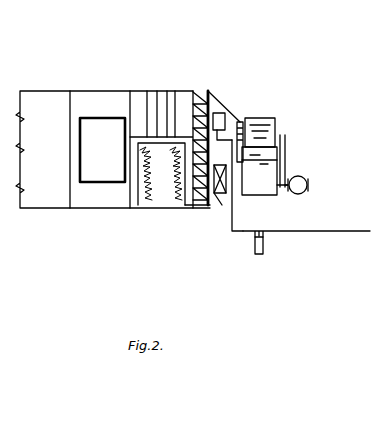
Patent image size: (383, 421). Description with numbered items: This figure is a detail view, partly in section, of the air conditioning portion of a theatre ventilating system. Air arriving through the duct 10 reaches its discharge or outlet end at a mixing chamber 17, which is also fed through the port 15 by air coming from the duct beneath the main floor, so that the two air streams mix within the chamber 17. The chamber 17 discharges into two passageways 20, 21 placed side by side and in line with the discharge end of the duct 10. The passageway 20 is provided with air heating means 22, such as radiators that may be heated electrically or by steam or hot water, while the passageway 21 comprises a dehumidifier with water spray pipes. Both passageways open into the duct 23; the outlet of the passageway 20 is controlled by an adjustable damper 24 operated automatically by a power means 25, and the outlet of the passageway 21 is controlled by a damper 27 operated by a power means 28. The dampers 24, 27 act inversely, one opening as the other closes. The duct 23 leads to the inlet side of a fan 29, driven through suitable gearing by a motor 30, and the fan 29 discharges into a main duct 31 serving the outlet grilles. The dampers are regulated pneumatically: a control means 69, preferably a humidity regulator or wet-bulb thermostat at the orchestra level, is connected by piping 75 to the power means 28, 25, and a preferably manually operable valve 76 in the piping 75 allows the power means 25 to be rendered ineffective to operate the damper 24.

The duct 10 is at (45, 98).
The port 15 is at (100, 133).
The mixing chamber 17 is at (103, 198).
The passageway 20 is at (137, 100).
The passageway 21 is at (163, 197).
The air heating means 22 is at (168, 100).
The duct 23 is at (219, 112).
The damper 24 is at (209, 92).
The power means 25 is at (224, 130).
The damper 27 is at (199, 207).
The power means 28 is at (222, 193).
The fan 29 is at (273, 128).
The motor 30 is at (307, 181).
The main duct 31 is at (281, 190).
The control means 69 is at (263, 250).
The piping 75 is at (234, 226).
The valve 76 is at (253, 186).